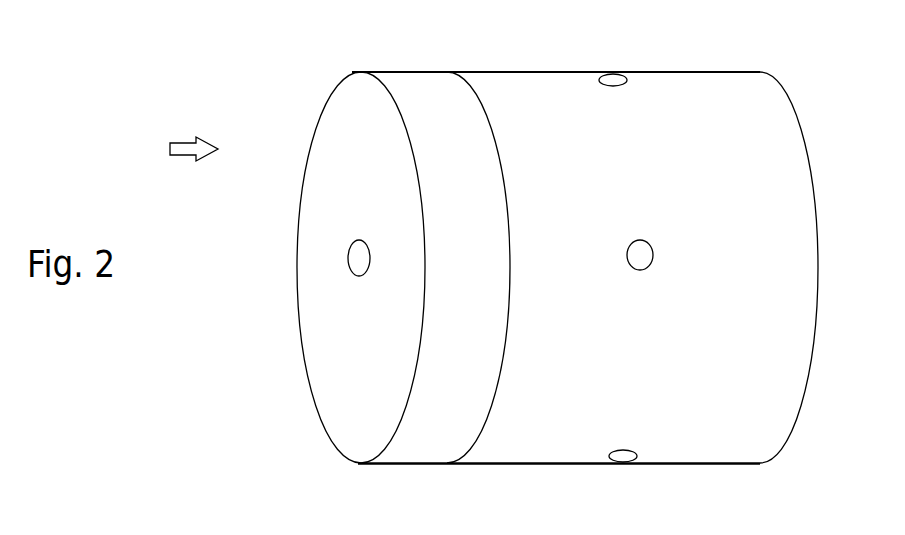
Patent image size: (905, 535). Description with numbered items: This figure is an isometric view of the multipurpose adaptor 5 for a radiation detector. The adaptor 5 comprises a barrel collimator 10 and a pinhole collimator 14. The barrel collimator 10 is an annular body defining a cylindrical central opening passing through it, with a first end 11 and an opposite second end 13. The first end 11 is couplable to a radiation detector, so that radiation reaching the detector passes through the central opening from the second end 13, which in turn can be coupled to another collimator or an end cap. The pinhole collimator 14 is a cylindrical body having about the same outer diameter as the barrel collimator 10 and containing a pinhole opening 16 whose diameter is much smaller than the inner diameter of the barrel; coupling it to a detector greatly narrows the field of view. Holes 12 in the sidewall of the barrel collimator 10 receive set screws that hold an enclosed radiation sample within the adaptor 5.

The multipurpose adaptor 5 is at (180, 151).
The barrel collimator 10 is at (683, 72).
The first end 11 is at (808, 178).
The holes 12 is at (616, 78).
The second end 13 is at (505, 203).
The pinhole collimator 14 is at (418, 72).
The pinhole opening 16 is at (348, 258).